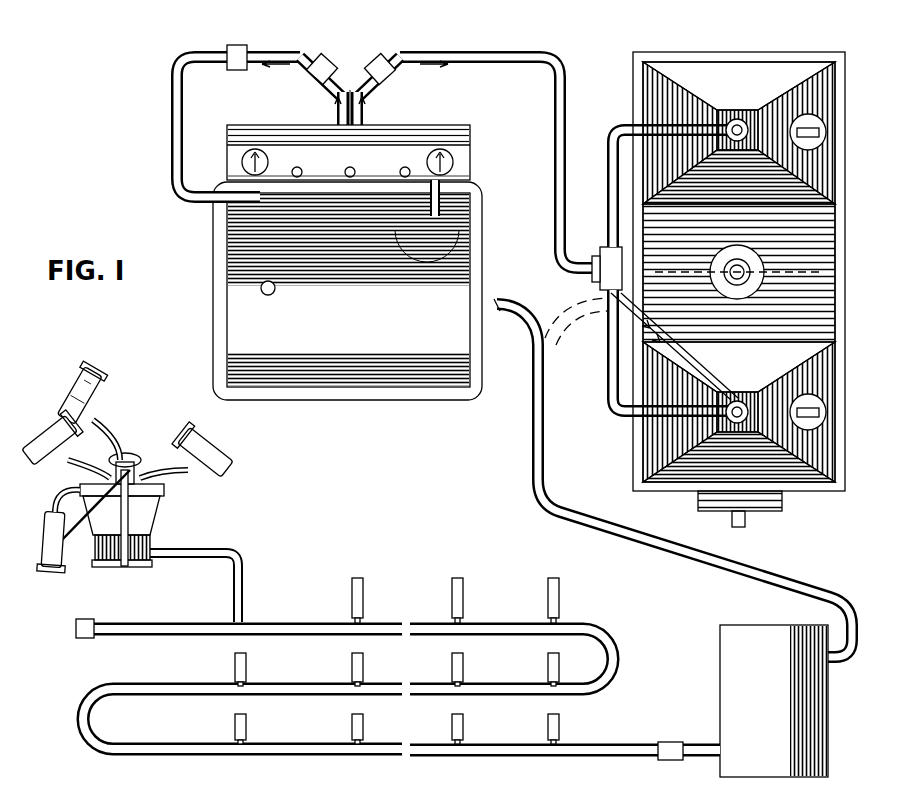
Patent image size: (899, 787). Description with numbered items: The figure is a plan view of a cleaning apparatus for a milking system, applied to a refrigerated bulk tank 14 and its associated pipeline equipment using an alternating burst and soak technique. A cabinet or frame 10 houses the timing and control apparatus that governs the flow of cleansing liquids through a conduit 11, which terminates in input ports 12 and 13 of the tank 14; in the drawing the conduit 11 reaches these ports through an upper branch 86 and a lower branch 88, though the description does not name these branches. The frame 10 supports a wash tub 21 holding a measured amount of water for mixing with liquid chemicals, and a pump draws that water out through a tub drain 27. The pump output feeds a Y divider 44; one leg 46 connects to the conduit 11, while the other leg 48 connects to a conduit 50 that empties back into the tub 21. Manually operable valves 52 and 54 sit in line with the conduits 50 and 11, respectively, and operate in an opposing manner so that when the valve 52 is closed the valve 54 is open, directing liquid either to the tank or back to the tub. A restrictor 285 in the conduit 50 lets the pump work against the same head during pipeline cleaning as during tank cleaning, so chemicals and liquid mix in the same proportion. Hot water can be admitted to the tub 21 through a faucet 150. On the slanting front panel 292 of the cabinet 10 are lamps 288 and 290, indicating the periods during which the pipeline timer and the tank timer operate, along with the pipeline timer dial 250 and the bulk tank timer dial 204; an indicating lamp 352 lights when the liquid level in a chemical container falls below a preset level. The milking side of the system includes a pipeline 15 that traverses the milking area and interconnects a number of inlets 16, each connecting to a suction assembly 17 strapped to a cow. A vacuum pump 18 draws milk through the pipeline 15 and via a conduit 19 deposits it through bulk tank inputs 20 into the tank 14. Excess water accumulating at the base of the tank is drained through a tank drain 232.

The cabinet or frame 10 is at (470, 138).
The conduit 11 is at (452, 55).
The input port 12 is at (740, 119).
The input port 13 is at (742, 401).
The tank 14 is at (698, 52).
The pipeline 15 is at (290, 622).
The inlets 16 is at (245, 575).
The suction assembly 17 is at (193, 503).
The vacuum pump 18 is at (720, 672).
The conduit 19 is at (545, 435).
The bulk tank inputs 20 is at (826, 130).
The wash tub 21 is at (363, 317).
The tub drain 27 is at (262, 289).
The Y divider 44 is at (336, 102).
The leg 46 is at (361, 73).
The leg 48 is at (345, 73).
The conduit 50 is at (175, 132).
The valve 52 is at (326, 58).
The valve 54 is at (386, 58).
The upper branch conduit 86 is at (618, 124).
The lower branch conduit 88 is at (607, 380).
The faucet 150 is at (458, 214).
The bulk tank timer dial 204 is at (452, 163).
The tank drain 232 is at (745, 522).
The pipeline timer dial 250 is at (243, 163).
The restrictor 285 is at (228, 50).
The lamp 288 is at (295, 168).
The lamp 290 is at (402, 168).
The slanting front panel 292 is at (470, 176).
The indicating lamp 352 is at (354, 178).